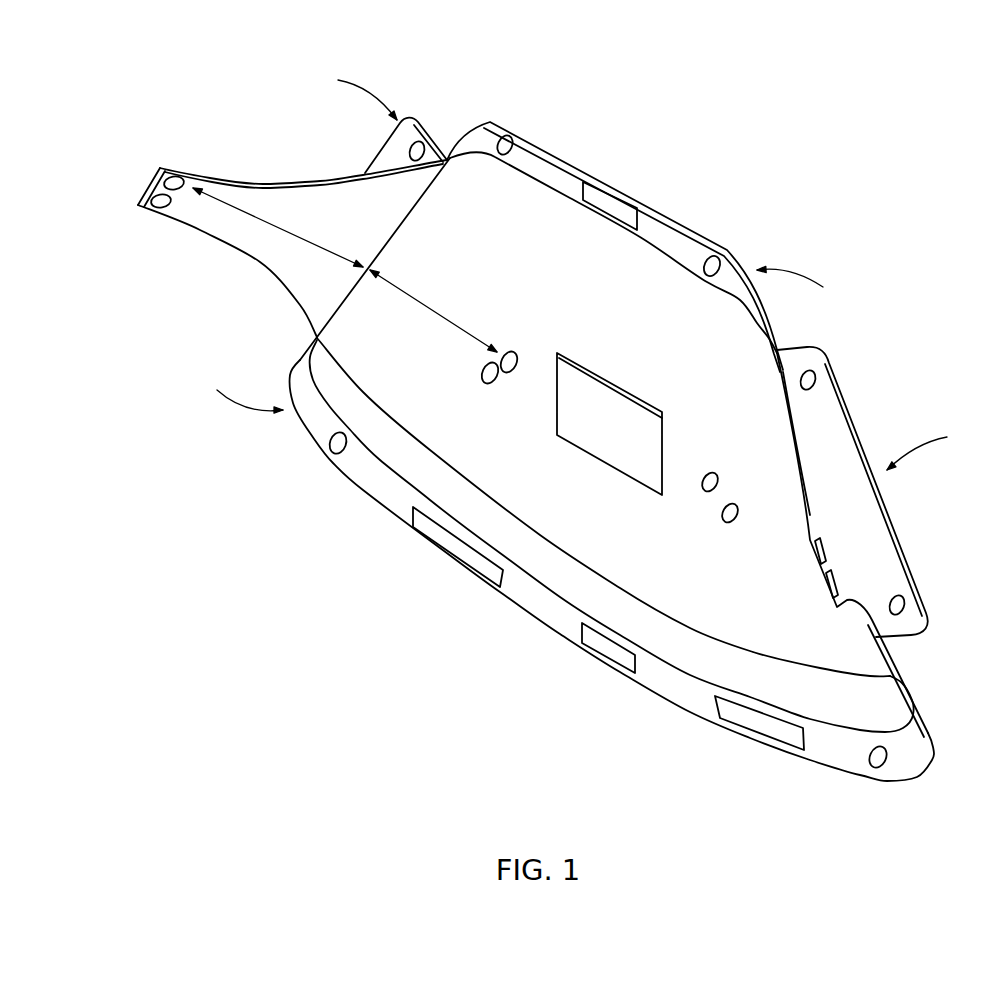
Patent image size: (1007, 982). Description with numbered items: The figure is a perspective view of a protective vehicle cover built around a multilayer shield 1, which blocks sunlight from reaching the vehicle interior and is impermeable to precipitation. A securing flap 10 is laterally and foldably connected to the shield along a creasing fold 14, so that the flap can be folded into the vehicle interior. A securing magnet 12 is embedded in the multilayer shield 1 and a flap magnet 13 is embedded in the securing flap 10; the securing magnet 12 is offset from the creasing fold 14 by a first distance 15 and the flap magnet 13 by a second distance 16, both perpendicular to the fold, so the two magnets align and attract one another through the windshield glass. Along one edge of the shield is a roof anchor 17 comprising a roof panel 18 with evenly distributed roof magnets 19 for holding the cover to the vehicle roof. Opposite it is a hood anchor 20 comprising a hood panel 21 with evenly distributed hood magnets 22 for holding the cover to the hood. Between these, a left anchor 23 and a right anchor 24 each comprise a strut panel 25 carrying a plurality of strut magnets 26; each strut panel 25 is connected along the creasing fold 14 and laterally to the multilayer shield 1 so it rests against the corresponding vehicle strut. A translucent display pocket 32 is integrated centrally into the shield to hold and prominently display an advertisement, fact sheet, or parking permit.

The multilayer shield 1 is at (403, 227).
The securing flap 10 is at (267, 270).
The securing magnet 12 is at (512, 357).
The flap magnet 13 is at (184, 191).
The creasing fold 14 is at (337, 307).
The first distance 15 is at (433, 311).
The second distance 16 is at (287, 230).
The roof anchor 17 is at (663, 250).
The roof panel 18 is at (672, 218).
The roof magnets 19 is at (612, 215).
The hood anchor 20 is at (553, 536).
The hood panel 21 is at (653, 688).
The hood magnets 22 is at (445, 532).
The left anchor 23 is at (874, 542).
The right anchor 24 is at (378, 122).
The strut panel 25 is at (432, 132).
The strut magnets 26 is at (412, 148).
The display pocket 32 is at (625, 467).